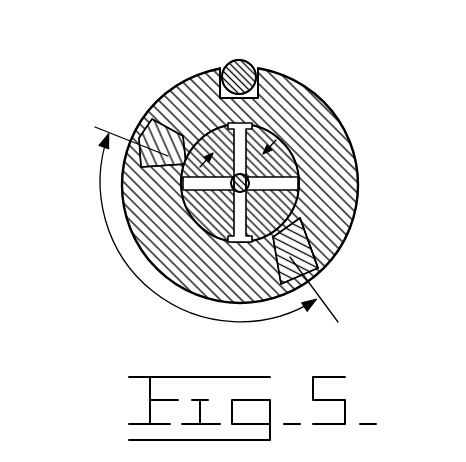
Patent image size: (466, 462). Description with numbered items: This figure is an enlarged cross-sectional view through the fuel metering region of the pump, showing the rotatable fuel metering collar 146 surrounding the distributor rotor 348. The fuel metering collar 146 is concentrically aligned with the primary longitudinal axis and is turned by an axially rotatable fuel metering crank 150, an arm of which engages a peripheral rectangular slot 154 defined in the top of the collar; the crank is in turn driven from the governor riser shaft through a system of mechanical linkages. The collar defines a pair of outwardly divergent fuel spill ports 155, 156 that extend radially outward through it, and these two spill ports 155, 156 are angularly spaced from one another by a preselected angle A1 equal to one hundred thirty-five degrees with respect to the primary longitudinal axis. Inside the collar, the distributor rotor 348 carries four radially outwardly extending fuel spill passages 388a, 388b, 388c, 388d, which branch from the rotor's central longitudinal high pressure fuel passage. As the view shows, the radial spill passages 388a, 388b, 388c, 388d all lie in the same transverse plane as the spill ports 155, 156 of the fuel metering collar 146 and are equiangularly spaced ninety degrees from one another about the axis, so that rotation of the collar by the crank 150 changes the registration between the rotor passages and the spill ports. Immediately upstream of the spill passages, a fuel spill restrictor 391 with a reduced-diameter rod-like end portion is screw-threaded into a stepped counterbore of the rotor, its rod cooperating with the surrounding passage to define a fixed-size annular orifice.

The fuel metering collar 146 is at (302, 84).
The fuel metering crank 150 is at (243, 59).
The peripheral rectangular slot 154 is at (220, 76).
The fuel spill port 155 is at (138, 123).
The fuel spill port 156 is at (305, 272).
The distributor rotor 348 is at (306, 150).
The fuel spill passage 388a is at (185, 184).
The fuel spill passage 388b is at (250, 138).
The fuel spill passage 388c is at (298, 184).
The fuel spill passage 388d is at (235, 238).
The fuel spill restrictor 391 is at (334, 241).
The preselected angle A1 is at (213, 224).